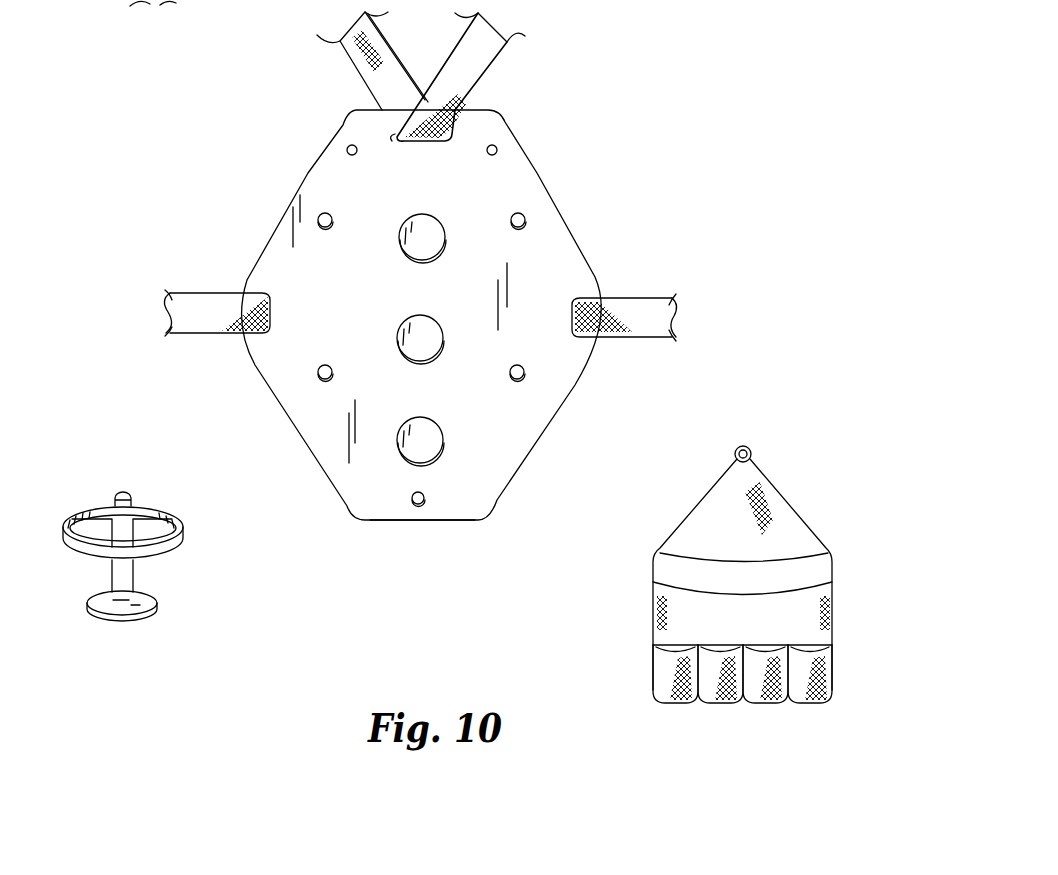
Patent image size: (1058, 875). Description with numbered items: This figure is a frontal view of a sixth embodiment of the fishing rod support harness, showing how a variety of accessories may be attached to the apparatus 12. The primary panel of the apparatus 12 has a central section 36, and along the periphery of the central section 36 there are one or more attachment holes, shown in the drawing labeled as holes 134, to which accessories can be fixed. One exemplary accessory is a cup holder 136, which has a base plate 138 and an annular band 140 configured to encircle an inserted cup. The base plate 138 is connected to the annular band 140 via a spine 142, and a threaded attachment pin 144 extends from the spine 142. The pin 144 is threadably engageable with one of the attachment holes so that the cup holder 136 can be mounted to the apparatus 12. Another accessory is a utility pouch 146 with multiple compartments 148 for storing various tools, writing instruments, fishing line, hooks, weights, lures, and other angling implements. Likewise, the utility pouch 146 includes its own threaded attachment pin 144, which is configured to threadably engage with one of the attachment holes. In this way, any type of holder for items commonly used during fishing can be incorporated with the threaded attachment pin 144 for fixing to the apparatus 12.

The apparatus 12 is at (522, 163).
The central section 36 is at (460, 530).
The fastener apertures 134 is at (322, 214).
The cup holder 136 is at (157, 608).
The base plate 138 is at (110, 613).
The annular band 140 is at (183, 530).
The spine 142 is at (108, 575).
The threaded attachment pin 144 is at (319, 376).
The utility pouch 146 is at (832, 605).
The compartments 148 is at (662, 678).